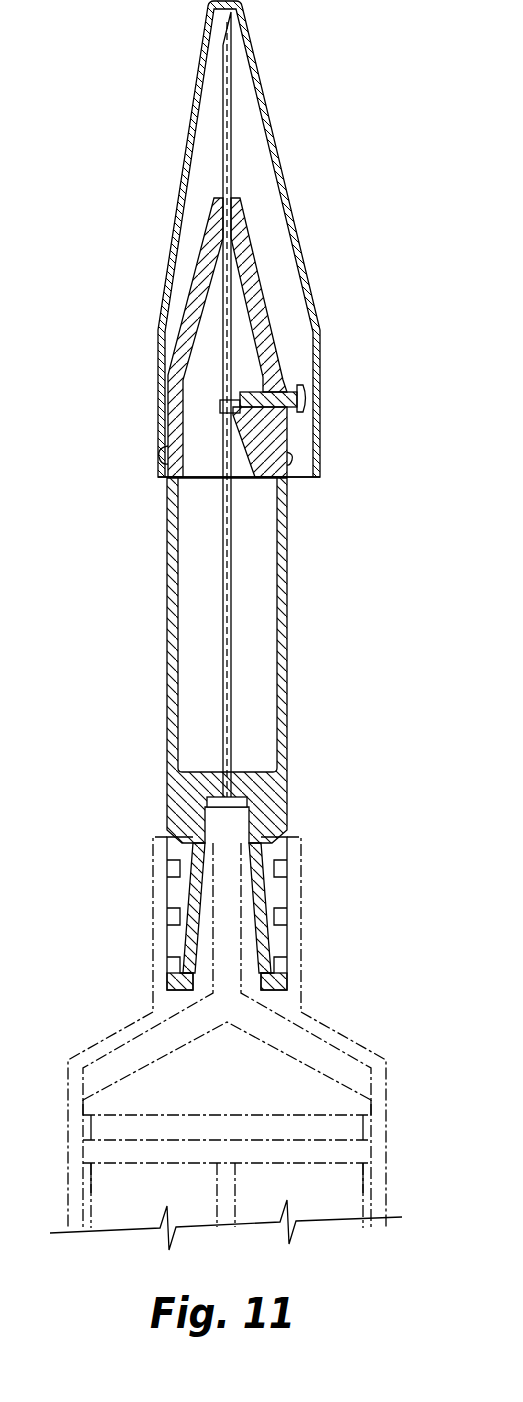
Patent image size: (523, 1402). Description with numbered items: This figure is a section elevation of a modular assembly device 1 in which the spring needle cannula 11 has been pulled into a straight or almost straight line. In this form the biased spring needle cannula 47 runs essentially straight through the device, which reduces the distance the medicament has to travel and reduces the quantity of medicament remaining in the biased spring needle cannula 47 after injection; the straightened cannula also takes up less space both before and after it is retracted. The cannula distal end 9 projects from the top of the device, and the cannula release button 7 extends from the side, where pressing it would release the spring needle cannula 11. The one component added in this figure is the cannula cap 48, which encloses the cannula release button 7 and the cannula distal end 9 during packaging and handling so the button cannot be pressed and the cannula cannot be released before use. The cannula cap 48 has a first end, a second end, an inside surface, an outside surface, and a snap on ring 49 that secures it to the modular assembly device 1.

The modular assembly device 1 is at (374, 211).
The cannula release button 7 is at (300, 386).
The cannula distal end 9 is at (232, 88).
The spring needle cannula 11 is at (230, 572).
The biased spring needle cannula 47 is at (231, 727).
The cannula cap 48 is at (281, 121).
The snap on ring 49 is at (292, 453).